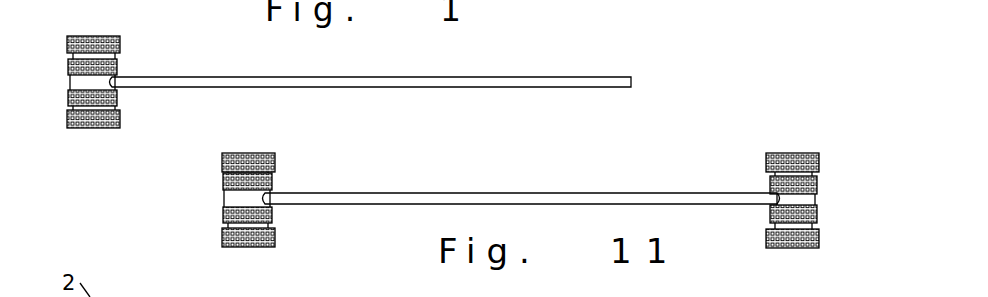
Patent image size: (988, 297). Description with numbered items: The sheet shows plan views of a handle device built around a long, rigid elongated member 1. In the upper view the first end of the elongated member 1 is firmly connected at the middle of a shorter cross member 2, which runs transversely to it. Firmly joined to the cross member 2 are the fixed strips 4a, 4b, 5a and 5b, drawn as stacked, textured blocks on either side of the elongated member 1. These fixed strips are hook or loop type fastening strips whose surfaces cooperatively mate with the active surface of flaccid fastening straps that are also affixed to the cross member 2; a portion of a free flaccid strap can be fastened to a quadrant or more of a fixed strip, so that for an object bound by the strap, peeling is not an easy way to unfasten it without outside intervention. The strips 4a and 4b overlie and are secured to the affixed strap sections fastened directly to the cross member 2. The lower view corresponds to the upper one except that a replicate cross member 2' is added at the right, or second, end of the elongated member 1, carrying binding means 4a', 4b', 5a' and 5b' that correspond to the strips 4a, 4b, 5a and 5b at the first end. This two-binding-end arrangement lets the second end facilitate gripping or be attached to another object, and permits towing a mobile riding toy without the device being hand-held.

In FIG. 1, the elongated member 1 is at (445, 80).
In FIG. 11, the elongated member 1 is at (320, 198).
In FIG. 1, the cross member 2 is at (70, 81).
In FIG. 11, the cross member 2 is at (226, 190).
In FIG. 1, the fixed strip 4a is at (117, 129).
In FIG. 11, the fixed strip 4a is at (228, 243).
In FIG. 1, the fixed strip 4b is at (117, 30).
In FIG. 11, the fixed strip 4b is at (272, 147).
In FIG. 1, the fixed strip 5a is at (71, 106).
In FIG. 11, the fixed strip 5a is at (227, 214).
In FIG. 1, the fixed strip 5b is at (71, 59).
In FIG. 11, the fixed strip 5b is at (227, 167).
In FIG. 11, the replicate cross member 2' is at (823, 187).
In FIG. 11, the binding means 4a' is at (822, 239).
In FIG. 11, the binding means 4b' is at (817, 145).
In FIG. 11, the binding means 5a' is at (763, 221).
In FIG. 11, the binding means 5b' is at (763, 177).